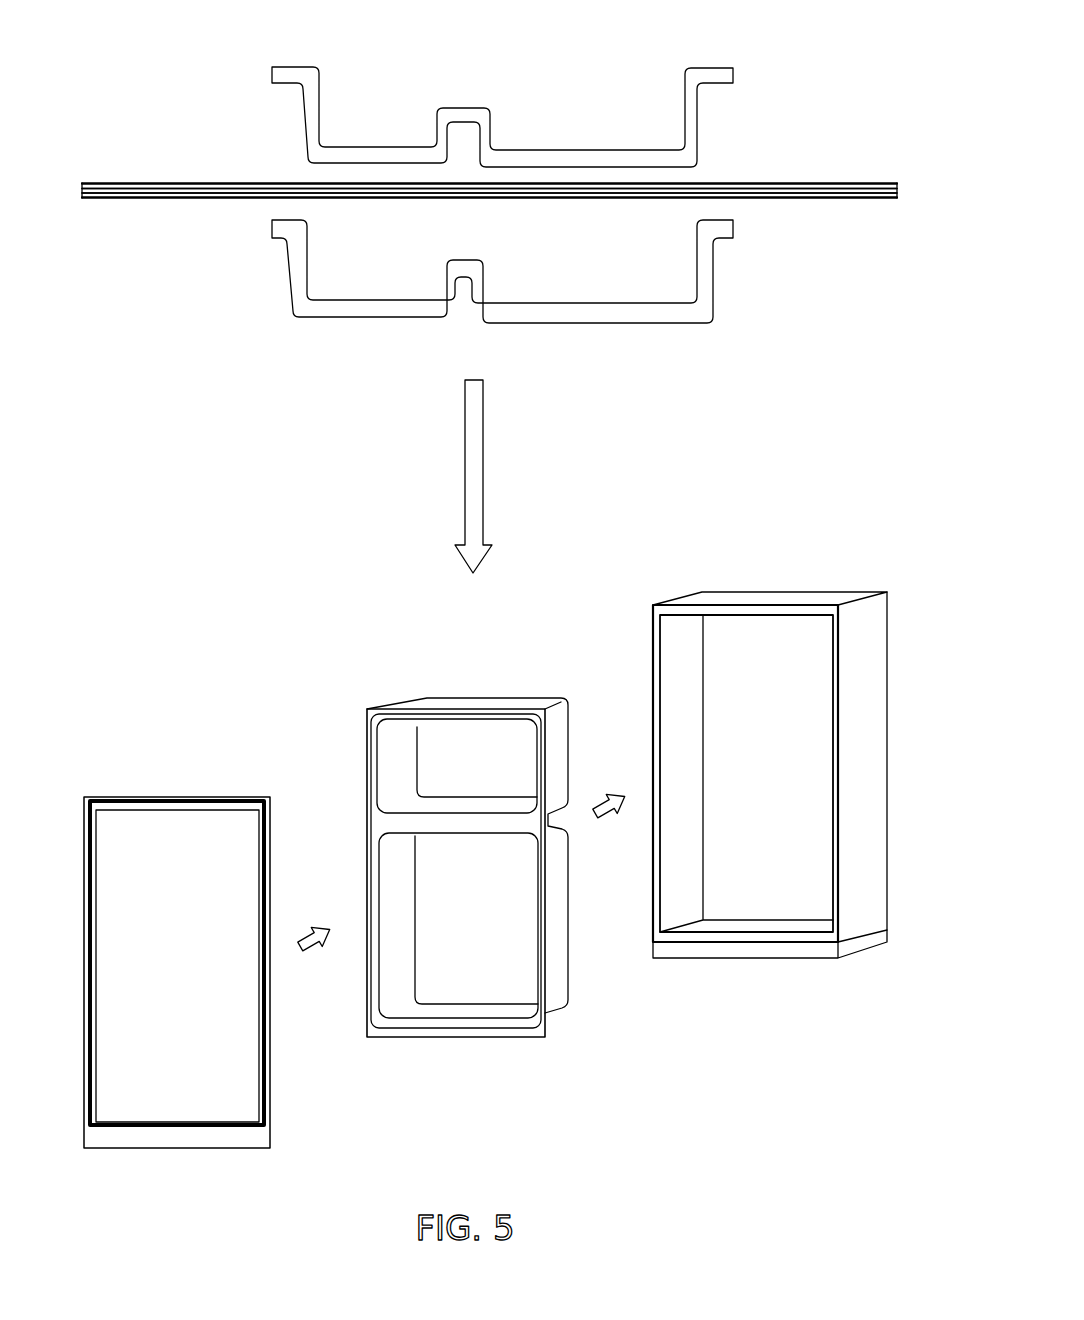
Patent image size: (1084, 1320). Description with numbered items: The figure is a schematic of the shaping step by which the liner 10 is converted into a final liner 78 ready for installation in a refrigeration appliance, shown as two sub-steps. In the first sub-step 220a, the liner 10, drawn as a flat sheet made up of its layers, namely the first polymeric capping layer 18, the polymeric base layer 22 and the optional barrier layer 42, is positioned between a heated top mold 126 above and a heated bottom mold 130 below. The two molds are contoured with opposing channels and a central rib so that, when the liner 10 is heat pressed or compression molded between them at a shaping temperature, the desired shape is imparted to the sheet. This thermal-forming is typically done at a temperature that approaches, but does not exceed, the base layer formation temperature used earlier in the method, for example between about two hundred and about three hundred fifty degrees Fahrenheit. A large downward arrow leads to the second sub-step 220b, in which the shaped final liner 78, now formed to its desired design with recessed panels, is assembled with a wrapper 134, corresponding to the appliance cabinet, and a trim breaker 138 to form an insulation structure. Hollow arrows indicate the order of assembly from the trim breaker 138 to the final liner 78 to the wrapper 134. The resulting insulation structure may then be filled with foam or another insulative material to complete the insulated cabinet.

The heat-pressing sub-step 220a is at (175, 45).
The heated top mold 126 is at (692, 117).
The heated bottom mold 130 is at (703, 265).
The liner 10 is at (170, 182).
The barrier layer 42 is at (852, 183).
The polymeric base layer 22 is at (898, 191).
The first polymeric capping layer 18 is at (863, 198).
The assembly sub-step 220b is at (215, 605).
The trim breaker 138 is at (172, 803).
The final liner 78 is at (475, 702).
The wrapper 134 is at (772, 597).